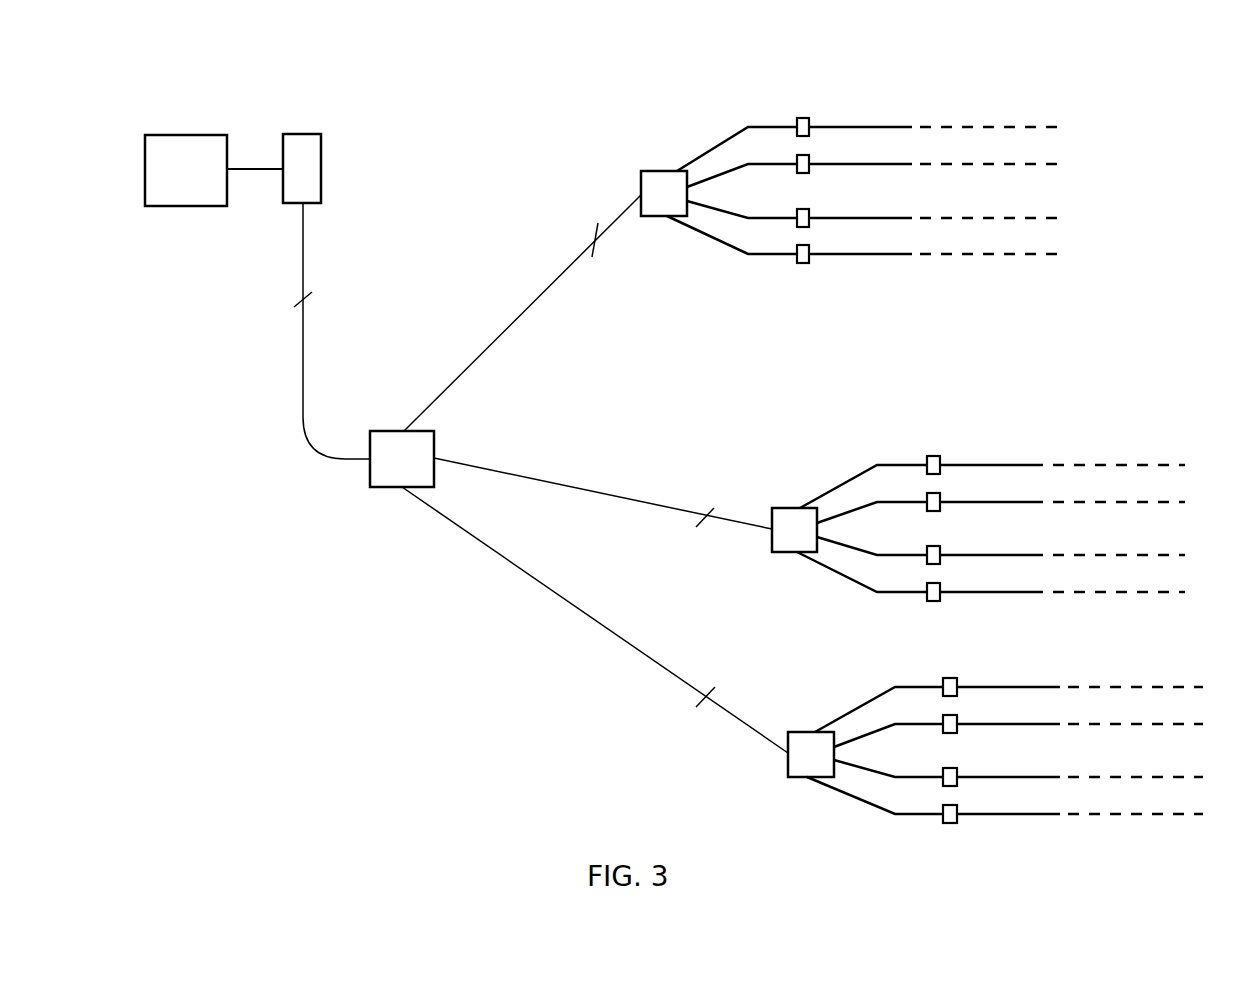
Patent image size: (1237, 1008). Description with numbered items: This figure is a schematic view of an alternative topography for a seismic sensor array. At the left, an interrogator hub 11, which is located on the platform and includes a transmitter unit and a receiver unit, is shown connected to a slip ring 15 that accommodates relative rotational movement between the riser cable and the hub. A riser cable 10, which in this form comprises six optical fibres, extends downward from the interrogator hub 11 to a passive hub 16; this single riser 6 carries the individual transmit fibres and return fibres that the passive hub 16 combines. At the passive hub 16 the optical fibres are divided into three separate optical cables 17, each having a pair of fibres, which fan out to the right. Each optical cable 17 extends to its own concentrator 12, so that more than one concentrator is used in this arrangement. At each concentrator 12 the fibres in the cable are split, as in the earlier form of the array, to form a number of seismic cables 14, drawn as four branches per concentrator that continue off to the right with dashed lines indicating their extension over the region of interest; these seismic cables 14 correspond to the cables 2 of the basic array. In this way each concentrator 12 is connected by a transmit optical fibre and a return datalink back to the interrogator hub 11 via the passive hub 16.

The cables 2 is at (658, 452).
The riser 6 is at (314, 303).
The riser cable 10 is at (305, 258).
The interrogator hub 11 is at (180, 134).
The concentrator 12 is at (651, 170).
The seismic cables 14 is at (840, 126).
The slip ring 15 is at (322, 146).
The passive hub 16 is at (391, 488).
The optical cables 17 is at (560, 274).